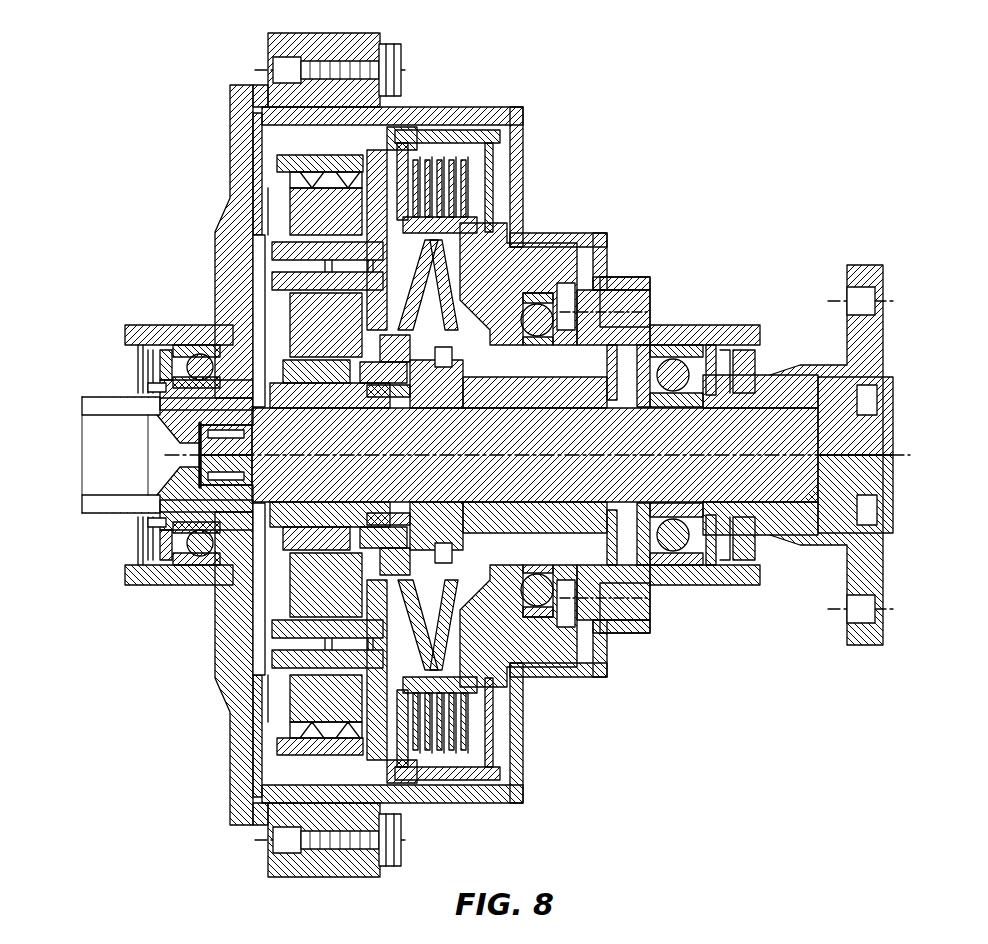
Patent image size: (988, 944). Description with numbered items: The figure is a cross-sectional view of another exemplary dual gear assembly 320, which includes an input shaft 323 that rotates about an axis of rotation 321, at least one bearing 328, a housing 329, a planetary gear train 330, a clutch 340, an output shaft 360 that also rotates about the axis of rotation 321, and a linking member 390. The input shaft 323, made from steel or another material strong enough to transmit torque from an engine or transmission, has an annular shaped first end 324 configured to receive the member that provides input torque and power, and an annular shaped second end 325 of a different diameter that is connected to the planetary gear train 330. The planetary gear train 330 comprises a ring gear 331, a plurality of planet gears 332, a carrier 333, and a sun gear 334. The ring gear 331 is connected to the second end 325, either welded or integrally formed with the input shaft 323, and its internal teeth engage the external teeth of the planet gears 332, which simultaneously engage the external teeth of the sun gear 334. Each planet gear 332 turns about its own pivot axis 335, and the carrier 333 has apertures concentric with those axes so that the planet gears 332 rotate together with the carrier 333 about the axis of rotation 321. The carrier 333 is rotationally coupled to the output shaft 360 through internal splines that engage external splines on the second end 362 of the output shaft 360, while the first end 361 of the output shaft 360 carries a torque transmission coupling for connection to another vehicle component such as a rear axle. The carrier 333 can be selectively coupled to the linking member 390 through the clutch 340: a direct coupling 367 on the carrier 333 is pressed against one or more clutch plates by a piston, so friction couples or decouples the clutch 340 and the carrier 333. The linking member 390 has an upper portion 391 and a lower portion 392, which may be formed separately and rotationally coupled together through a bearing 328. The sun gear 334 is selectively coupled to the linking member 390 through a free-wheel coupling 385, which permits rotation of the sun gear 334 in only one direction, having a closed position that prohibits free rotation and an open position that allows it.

The dual gear assembly 320 is at (466, 446).
The axis of rotation 321 is at (578, 452).
The input shaft 323 is at (175, 515).
The first end 324 is at (103, 497).
The second end 325 is at (258, 150).
The bearing 328 is at (198, 552).
The housing 329 is at (231, 783).
The planetary gear train 330 is at (252, 240).
The ring gear 331 is at (355, 156).
The planet gears 332 is at (310, 200).
The carrier 333 is at (262, 360).
The sun gear 334 is at (305, 355).
The axis of rotation of planet gear 335 is at (262, 640).
The clutch 340 is at (490, 185).
The output shaft 360 is at (552, 488).
The first end 361 is at (797, 449).
The second end 362 is at (317, 447).
The direct coupling 367 is at (490, 145).
The free-wheel coupling 385 is at (393, 398).
The linking member 390 is at (582, 265).
The upper portion 391 is at (527, 263).
The lower portion 392 is at (610, 303).